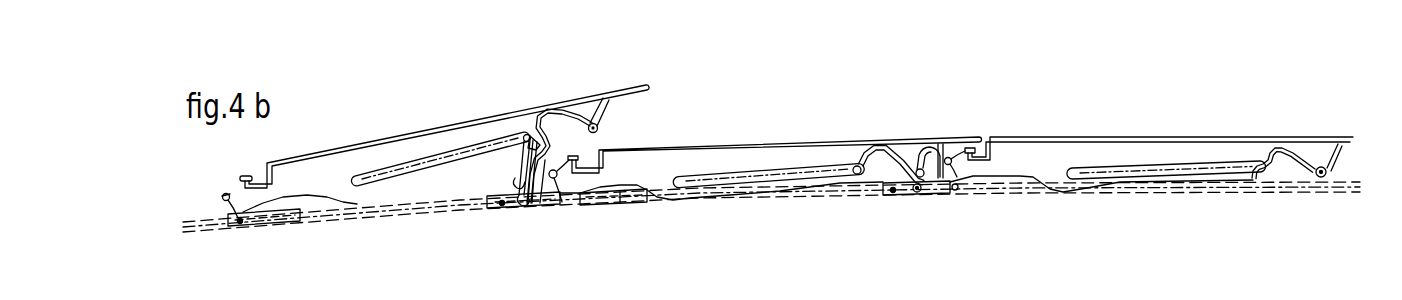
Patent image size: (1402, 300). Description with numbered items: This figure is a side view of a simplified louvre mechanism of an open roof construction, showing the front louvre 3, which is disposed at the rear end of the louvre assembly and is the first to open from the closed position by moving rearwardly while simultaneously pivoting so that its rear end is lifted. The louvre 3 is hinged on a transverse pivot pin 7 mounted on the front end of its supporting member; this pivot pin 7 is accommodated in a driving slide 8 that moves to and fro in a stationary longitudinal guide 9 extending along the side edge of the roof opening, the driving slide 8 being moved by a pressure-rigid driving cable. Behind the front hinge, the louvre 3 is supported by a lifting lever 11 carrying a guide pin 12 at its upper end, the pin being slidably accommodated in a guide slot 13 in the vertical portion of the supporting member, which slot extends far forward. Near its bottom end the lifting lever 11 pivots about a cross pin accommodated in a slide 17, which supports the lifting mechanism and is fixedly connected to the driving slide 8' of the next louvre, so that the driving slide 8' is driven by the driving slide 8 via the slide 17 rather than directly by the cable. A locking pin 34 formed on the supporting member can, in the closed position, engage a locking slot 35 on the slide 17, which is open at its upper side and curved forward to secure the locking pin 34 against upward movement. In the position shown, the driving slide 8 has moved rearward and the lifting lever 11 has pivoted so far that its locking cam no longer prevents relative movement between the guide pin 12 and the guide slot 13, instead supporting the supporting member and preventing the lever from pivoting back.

The front louvre 3 is at (367, 143).
The guide slot 13 is at (405, 166).
The guide pin 12 is at (528, 140).
The locking pin 34 is at (594, 124).
The pivot pin 7 is at (240, 223).
The driving slide 8 is at (264, 243).
The longitudinal guide 9 is at (406, 210).
The slide 17 is at (498, 205).
The lifting lever 11 is at (530, 165).
The locking slot 35 is at (542, 175).
The driving slide 8' is at (613, 233).